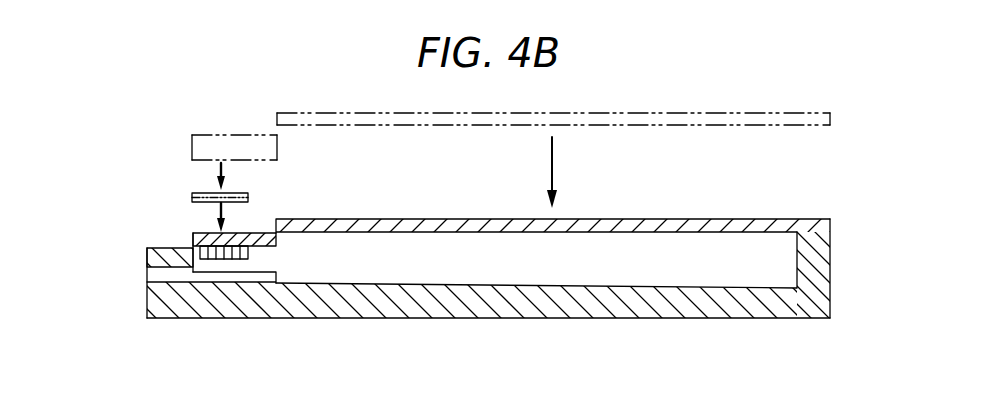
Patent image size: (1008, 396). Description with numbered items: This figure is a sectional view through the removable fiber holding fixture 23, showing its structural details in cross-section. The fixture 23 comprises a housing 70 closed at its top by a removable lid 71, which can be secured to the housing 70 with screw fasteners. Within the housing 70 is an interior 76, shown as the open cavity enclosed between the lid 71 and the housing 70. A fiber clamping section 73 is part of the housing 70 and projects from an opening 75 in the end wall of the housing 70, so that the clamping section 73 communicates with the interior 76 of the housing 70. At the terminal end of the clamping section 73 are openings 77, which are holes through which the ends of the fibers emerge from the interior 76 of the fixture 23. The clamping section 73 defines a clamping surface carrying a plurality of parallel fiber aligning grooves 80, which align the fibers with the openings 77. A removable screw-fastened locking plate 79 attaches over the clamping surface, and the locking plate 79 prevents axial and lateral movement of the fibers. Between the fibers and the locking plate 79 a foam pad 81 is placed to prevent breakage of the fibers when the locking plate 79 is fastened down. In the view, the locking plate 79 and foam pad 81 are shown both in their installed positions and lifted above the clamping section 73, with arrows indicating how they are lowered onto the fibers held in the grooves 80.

The removable fiber holding fixture 23 is at (163, 161).
The locking plate 79 is at (233, 134).
The foam pad 81 is at (192, 196).
The opening 75 is at (261, 263).
The fiber aligning grooves 80 is at (275, 280).
The openings 77 is at (158, 273).
The removable lid 71 is at (805, 223).
The interior 76 is at (624, 249).
The housing 70 is at (832, 281).
The fiber clamping section 73 is at (207, 319).